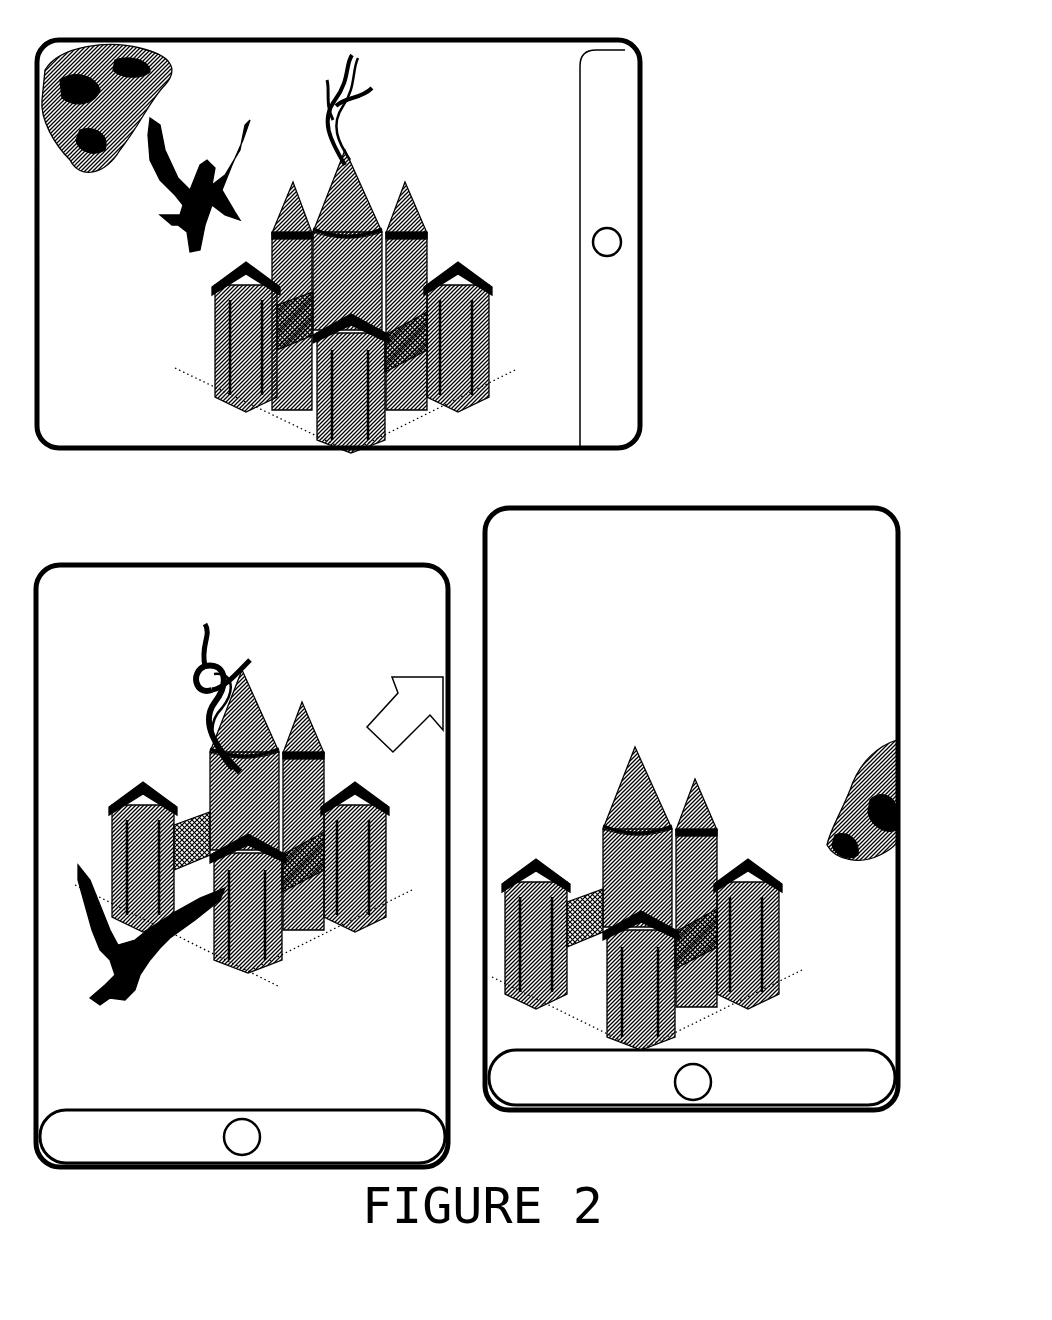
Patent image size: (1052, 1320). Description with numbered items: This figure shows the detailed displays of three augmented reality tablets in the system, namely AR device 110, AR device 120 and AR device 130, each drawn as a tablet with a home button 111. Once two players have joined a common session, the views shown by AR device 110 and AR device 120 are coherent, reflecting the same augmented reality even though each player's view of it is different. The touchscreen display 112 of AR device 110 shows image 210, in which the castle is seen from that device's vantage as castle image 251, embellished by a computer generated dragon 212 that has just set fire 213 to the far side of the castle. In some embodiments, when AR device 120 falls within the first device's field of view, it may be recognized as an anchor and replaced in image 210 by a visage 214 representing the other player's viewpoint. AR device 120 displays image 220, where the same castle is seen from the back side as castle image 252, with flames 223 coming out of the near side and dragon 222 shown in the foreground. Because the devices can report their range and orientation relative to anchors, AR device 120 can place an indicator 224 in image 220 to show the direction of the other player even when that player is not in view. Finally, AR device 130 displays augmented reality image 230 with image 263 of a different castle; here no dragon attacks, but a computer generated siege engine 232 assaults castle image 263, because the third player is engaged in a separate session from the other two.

The AR device 110 is at (640, 176).
The home button 111 is at (621, 232).
The touchscreen display 112 is at (505, 52).
The AR device 120 is at (150, 566).
The AR device 130 is at (698, 508).
The image 210 is at (129, 349).
The dragon 212 is at (243, 172).
The fire 213 is at (316, 124).
The visage 214 is at (170, 57).
The image 220 is at (392, 634).
The dragon 222 is at (150, 990).
The flames 223 is at (195, 652).
The indicator 224 is at (376, 750).
The augmented reality image 230 is at (784, 629).
The siege engine 232 is at (878, 752).
The castle image 251 is at (406, 200).
The castle image 252 is at (304, 692).
The image of castle 263 is at (648, 752).